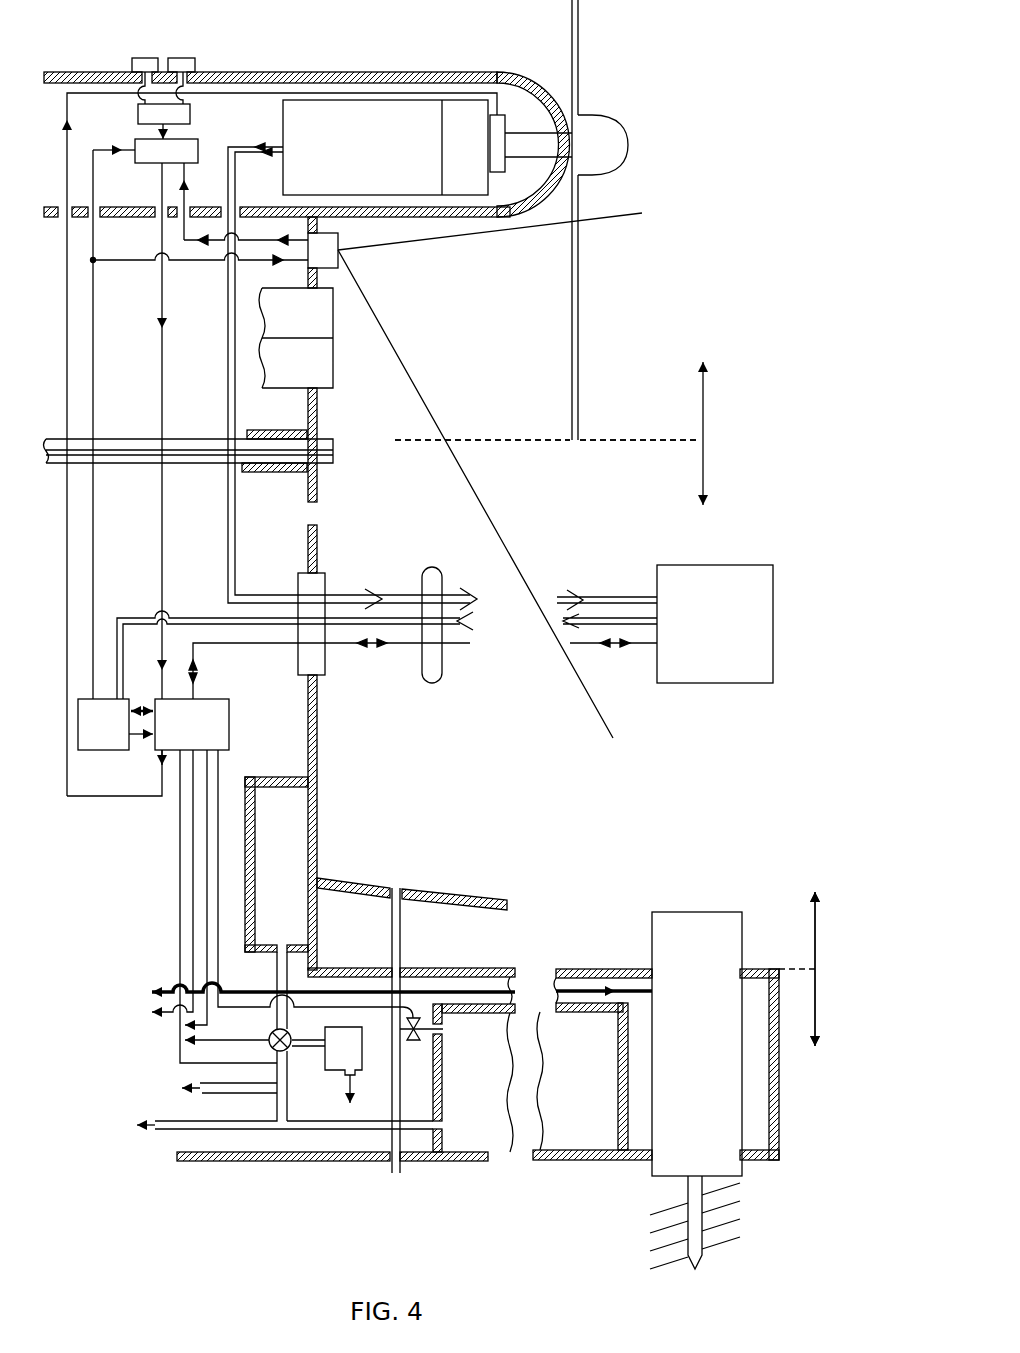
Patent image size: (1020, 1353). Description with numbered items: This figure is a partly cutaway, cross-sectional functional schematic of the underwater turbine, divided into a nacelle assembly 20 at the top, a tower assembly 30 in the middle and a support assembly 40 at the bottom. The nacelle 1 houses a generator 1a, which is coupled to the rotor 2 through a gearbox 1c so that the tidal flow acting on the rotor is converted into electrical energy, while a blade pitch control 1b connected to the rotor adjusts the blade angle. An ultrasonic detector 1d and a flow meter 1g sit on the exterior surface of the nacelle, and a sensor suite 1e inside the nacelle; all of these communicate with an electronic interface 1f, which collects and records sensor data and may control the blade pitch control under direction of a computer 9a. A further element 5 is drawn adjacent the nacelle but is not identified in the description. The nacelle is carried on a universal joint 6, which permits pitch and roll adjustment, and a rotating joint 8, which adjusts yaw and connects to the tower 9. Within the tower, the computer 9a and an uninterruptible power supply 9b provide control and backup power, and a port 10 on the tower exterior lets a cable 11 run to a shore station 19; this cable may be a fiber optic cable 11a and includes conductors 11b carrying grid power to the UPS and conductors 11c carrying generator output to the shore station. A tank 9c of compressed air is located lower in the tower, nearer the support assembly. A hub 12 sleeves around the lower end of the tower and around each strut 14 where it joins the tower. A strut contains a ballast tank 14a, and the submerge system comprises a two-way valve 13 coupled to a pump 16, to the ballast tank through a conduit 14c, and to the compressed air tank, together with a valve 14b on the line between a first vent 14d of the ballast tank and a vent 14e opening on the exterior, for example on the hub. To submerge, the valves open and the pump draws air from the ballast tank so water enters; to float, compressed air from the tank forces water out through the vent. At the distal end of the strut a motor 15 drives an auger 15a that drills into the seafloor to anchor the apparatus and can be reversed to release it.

The nacelle 1 is at (343, 72).
The generator 1a is at (407, 187).
The blade pitch control 1b is at (497, 175).
The gearbox 1c is at (470, 187).
The ultrasonic detector 1d is at (145, 58).
The sensor suite 1e is at (190, 115).
The electronic interface 1f is at (198, 150).
The flow meter 1g is at (183, 58).
The rotor 2 is at (579, 66).
The sensor unit 5 is at (327, 265).
The universal joint 6 is at (323, 362).
The rotating joint 8 is at (340, 447).
The tower 9 is at (320, 545).
The computer 9a is at (229, 725).
The uninterruptible power supply 9b is at (95, 750).
The tank 9c is at (285, 833).
The port 10 is at (325, 585).
The cable 11 is at (432, 683).
The fiber optic cable 11a is at (423, 667).
The conductors 11b is at (387, 654).
The conductors 11c is at (442, 378).
The hub 12 is at (460, 890).
The valve 13 is at (268, 1044).
The strut 14 is at (505, 968).
The ballast tank 14a is at (570, 1003).
The valve 14b is at (414, 1015).
The conduit 14c is at (440, 1160).
The first vent 14d is at (442, 1028).
The vent 14e is at (396, 888).
The motor 15 is at (680, 912).
The auger 15a is at (672, 1205).
The pump 16 is at (335, 1067).
The shore station 19 is at (715, 624).
The nacelle assembly 20 is at (570, 428).
The tower assembly 30 is at (615, 743).
The support assembly 40 is at (819, 988).